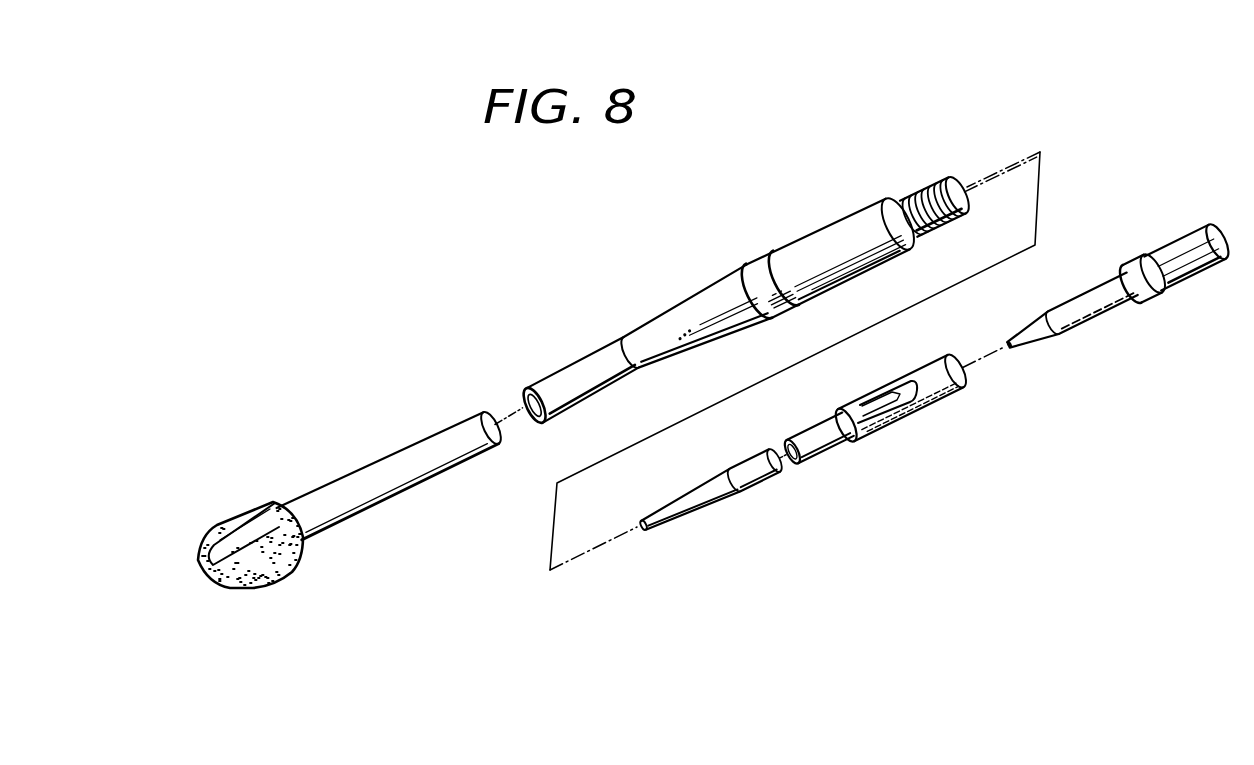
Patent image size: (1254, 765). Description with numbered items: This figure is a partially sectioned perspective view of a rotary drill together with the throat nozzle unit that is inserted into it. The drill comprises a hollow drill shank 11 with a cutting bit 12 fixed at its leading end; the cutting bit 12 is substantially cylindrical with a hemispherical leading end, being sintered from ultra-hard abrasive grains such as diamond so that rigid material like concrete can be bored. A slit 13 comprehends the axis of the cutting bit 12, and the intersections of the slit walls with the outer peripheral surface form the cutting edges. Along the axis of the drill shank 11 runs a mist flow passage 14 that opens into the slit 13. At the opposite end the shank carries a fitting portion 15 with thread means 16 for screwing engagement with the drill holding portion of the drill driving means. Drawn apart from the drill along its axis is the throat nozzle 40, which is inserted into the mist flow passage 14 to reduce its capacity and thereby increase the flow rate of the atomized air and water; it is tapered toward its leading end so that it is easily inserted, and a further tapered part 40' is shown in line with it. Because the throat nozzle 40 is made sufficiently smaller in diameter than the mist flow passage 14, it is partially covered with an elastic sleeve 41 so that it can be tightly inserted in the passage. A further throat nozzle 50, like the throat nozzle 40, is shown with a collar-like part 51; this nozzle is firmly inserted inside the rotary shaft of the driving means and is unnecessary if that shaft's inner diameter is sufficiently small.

The hollow drill shank 11 is at (590, 368).
The cutting bit 12 is at (252, 523).
The slit 13 is at (273, 570).
The mist flow passage 14 is at (522, 402).
The fitting portion 15 is at (805, 250).
The thread means 16 is at (938, 182).
The throat nozzle 40 is at (834, 471).
The tapered plug 40' is at (738, 503).
The elastic sleeve 41 is at (927, 397).
The throat nozzle 50 is at (1102, 308).
The collar cap 51 is at (1143, 300).